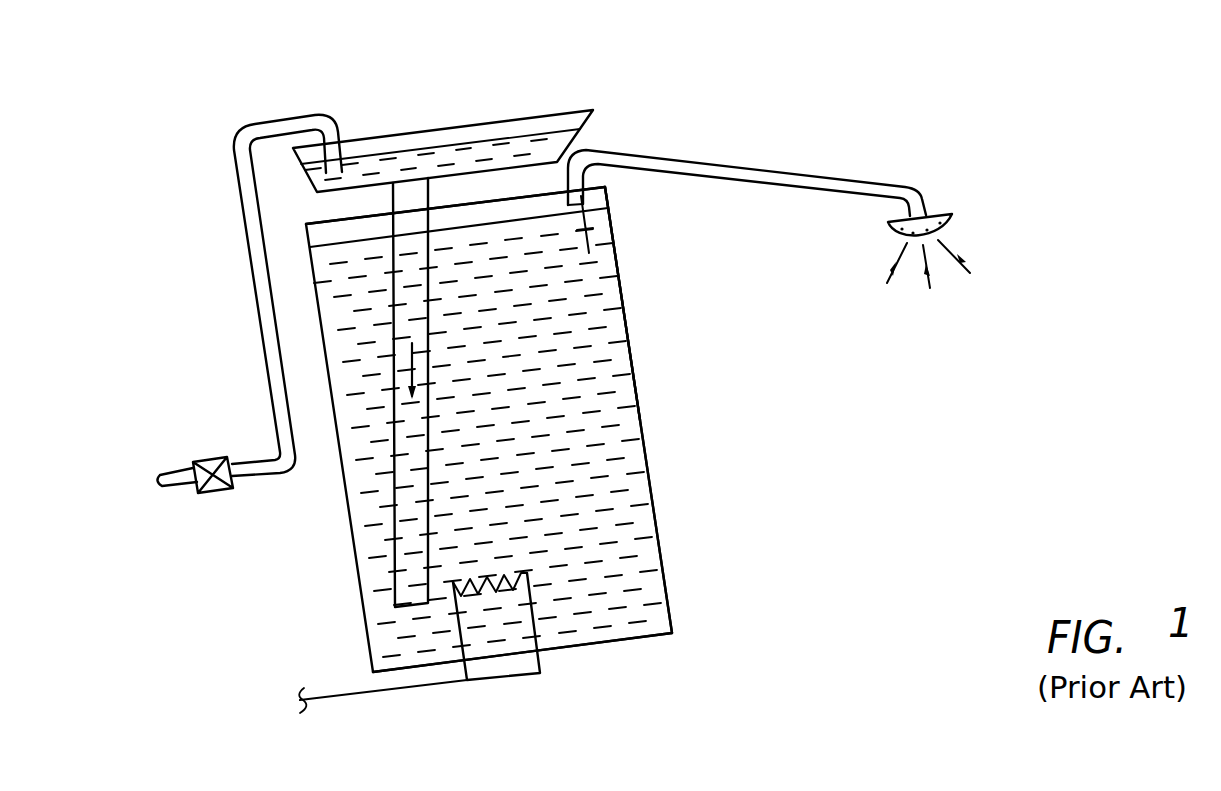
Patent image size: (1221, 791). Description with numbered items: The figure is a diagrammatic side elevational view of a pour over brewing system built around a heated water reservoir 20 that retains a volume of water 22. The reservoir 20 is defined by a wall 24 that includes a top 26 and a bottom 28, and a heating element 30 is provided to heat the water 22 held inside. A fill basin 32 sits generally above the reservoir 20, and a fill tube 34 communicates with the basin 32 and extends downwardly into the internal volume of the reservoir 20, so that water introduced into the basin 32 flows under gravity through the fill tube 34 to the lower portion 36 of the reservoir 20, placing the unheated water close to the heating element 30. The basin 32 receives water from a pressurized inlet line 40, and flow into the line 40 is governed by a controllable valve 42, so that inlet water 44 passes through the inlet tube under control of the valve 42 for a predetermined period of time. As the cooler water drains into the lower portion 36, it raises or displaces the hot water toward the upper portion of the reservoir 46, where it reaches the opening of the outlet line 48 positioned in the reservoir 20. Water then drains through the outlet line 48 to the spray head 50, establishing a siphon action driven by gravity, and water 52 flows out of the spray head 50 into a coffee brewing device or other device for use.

The heated water reservoir 20 is at (356, 568).
The water 22 is at (617, 420).
The wall 24 is at (655, 513).
The top 26 is at (320, 223).
The bottom 28 is at (630, 640).
The heating element 30 is at (460, 642).
The fill basin 32 is at (468, 125).
The fill tube 34 is at (395, 478).
The lower portion 36 is at (643, 565).
The pressurized inlet line 40 is at (266, 380).
The controllable valve 42 is at (208, 458).
The inlet water 44 is at (142, 482).
The upper portion of the reservoir 46 is at (603, 280).
The outlet line 48 is at (650, 170).
The spray head 50 is at (952, 217).
The water 52 is at (970, 273).